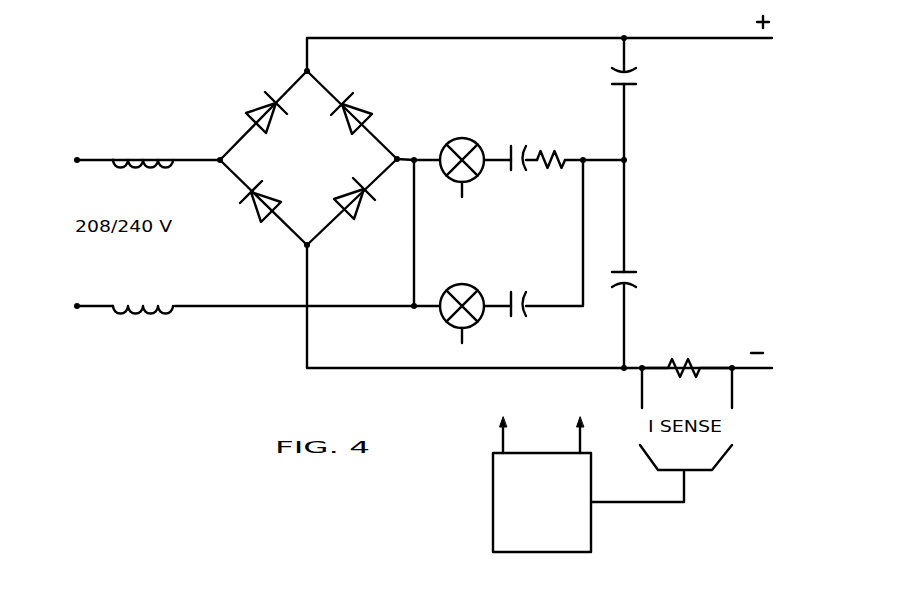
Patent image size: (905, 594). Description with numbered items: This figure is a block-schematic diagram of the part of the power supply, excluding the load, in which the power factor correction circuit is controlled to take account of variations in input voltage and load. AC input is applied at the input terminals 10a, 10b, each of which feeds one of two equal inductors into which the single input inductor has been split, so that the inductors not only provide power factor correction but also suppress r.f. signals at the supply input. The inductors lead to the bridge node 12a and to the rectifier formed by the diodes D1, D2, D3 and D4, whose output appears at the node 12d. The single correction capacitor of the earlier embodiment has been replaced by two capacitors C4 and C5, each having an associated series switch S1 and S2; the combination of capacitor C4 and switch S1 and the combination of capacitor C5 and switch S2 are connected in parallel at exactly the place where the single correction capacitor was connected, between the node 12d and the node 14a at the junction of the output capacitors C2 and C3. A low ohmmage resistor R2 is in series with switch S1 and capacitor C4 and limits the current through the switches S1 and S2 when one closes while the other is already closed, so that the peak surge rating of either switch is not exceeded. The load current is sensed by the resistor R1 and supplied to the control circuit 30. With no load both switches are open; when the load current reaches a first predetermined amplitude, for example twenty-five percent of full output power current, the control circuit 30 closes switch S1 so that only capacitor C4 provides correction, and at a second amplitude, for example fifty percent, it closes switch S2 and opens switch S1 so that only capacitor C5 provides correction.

The first AC input terminal 10a is at (93, 147).
The second AC input terminal 10b is at (93, 294).
The bridge rectifier input node 12a is at (221, 163).
The bridge rectifier output node 12d is at (398, 156).
The capacitor midpoint node 14a is at (625, 157).
The rectifier diode D1 is at (259, 107).
The rectifier diode D2 is at (256, 208).
The rectifier diode D3 is at (363, 111).
The rectifier diode D4 is at (363, 202).
The switch S1 is at (462, 163).
The switch S2 is at (462, 311).
The output capacitor C2 is at (639, 76).
The output capacitor C3 is at (639, 277).
The capacitor C4 is at (514, 143).
The capacitor C5 is at (514, 291).
The resistor R1 is at (687, 355).
The low ohmmage resistor R2 is at (551, 149).
The control circuit 30 is at (505, 475).